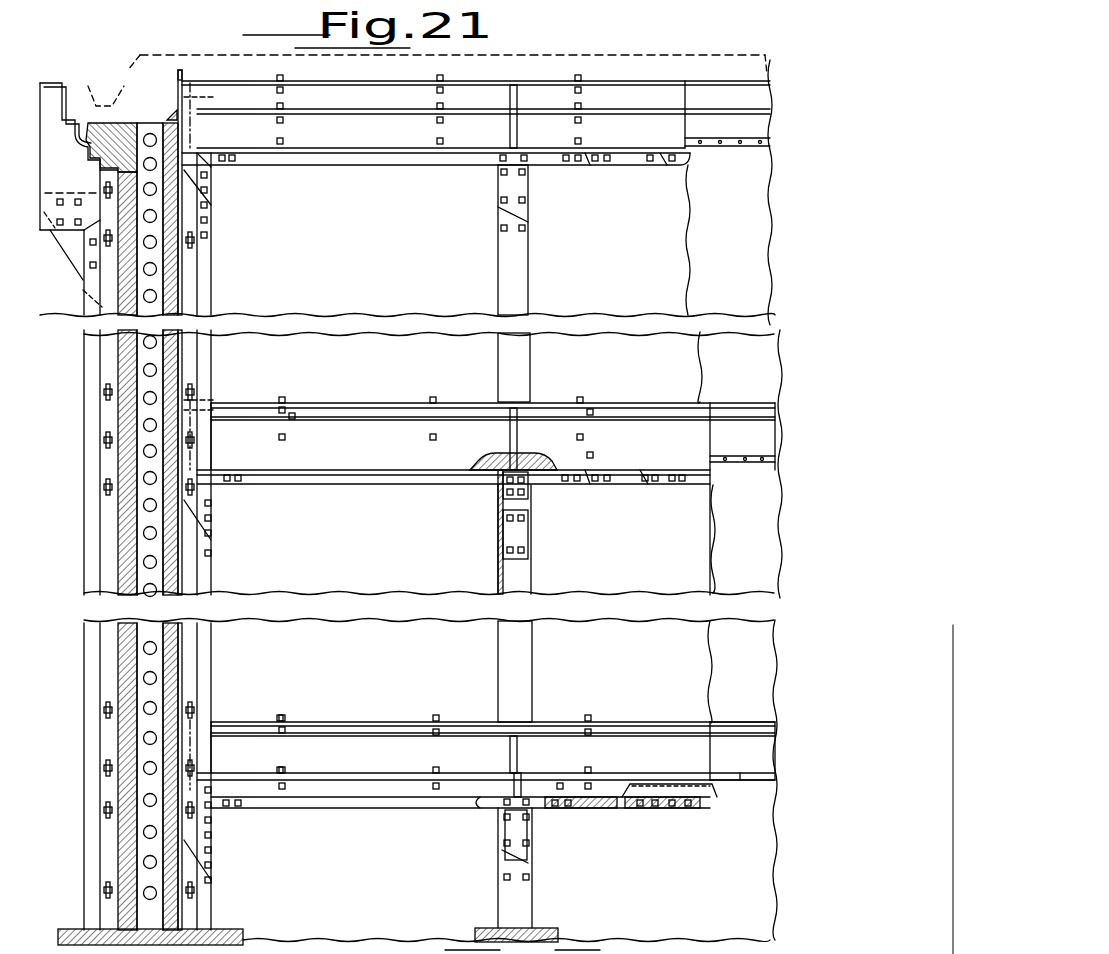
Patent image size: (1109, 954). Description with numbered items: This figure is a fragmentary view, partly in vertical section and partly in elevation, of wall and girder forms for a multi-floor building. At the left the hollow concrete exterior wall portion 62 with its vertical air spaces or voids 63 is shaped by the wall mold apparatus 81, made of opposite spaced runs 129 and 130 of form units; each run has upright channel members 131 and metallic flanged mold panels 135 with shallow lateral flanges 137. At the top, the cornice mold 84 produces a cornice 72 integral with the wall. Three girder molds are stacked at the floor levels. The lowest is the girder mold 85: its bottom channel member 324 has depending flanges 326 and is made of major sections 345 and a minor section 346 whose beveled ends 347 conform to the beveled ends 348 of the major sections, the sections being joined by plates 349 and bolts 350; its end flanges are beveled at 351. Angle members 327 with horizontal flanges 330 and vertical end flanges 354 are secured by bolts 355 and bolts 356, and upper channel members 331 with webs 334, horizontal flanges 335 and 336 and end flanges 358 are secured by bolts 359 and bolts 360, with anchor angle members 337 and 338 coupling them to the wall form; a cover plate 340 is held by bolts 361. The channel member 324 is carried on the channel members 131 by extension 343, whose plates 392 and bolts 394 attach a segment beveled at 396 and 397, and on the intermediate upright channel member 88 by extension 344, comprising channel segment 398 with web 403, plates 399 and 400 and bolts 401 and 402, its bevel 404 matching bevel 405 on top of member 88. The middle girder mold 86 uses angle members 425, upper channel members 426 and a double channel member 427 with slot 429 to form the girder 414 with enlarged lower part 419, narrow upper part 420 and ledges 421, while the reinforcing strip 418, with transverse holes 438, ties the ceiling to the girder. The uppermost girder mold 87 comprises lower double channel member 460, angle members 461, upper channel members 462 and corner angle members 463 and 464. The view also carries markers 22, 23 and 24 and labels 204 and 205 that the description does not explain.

The cornice 72 is at (71, 83).
The cornice mold 84 is at (74, 131).
The wall mold apparatus 81 is at (122, 266).
The plate 24 is at (191, 74).
The corner angle member 464 is at (222, 100).
The upper channel member 462 is at (312, 102).
The corner angle member 463 is at (220, 133).
The angle member 461 is at (346, 144).
The lower double channel member 460 is at (322, 158).
The girder mold 87 is at (428, 128).
The upright member 88 is at (528, 268).
The upright metallic channel member 131 is at (214, 261).
The upper channel member 426 is at (318, 408).
The angle member 425 is at (332, 450).
The double channel member 427 is at (320, 476).
The girder mold 86 is at (408, 445).
The section line 23 is at (230, 444).
The bolt 402 is at (512, 455).
The plate 400 is at (528, 492).
The web 403 is at (498, 491).
The channel member extension 344 is at (530, 512).
The channel segment 398 is at (500, 508).
The bevel 404 is at (505, 533).
The bevel 405 is at (530, 537).
The plate 399 is at (503, 544).
The bolt 401 is at (503, 561).
The beveled end 347 is at (655, 472).
The beveled end 348 is at (658, 485).
The narrow upper part 420 is at (728, 406).
The ledge 421 is at (757, 403).
The enlarged lower part 419 is at (748, 446).
The girder 414 is at (772, 437).
The transverse hole 438 is at (730, 464).
The reinforcing strip 418 is at (775, 470).
The hollow concrete exterior wall portion 62 is at (118, 386).
The vertical air space 63 is at (145, 478).
The run of form units 129 is at (120, 554).
The inside run of form units 130 is at (188, 578).
The cover plate 340 is at (308, 722).
The upper channel member 331 is at (375, 757).
The end coupling angle member 337 is at (226, 789).
The bottom channel member 324 is at (380, 812).
The girder mold 85 is at (456, 735).
The vertical end flange 358 is at (514, 752).
The horizontal flange 330 is at (467, 767).
The flange 326 is at (500, 812).
The major section 345 is at (410, 799).
The minor section 346 is at (595, 808).
The plate 349 is at (660, 808).
The bolt 350 is at (690, 790).
The bolt 355 is at (526, 790).
The bolt 359 is at (530, 735).
The web 334 is at (395, 730).
The angle member 327 is at (406, 788).
The vertical end flange 354 is at (460, 800).
The bolt 356 is at (320, 805).
The slot 429 is at (320, 816).
The end coupling angle member 338 is at (248, 735).
The bolt 361 is at (282, 718).
The horizontal flange 336 is at (290, 726).
The horizontal flange 335 is at (250, 774).
The bolt 360 is at (286, 766).
The section line 22 is at (235, 774).
The bevel 351 is at (218, 819).
The channel member extension 343 is at (210, 850).
The bolt 394 is at (215, 850).
The plate 392 is at (212, 886).
The metallic flanged mold panel 135 is at (118, 662).
The bolt 205 is at (190, 722).
The bevel 396 is at (185, 790).
The bolt 204 is at (211, 800).
The lateral flange 137 is at (112, 840).
The bevel 397 is at (210, 860).